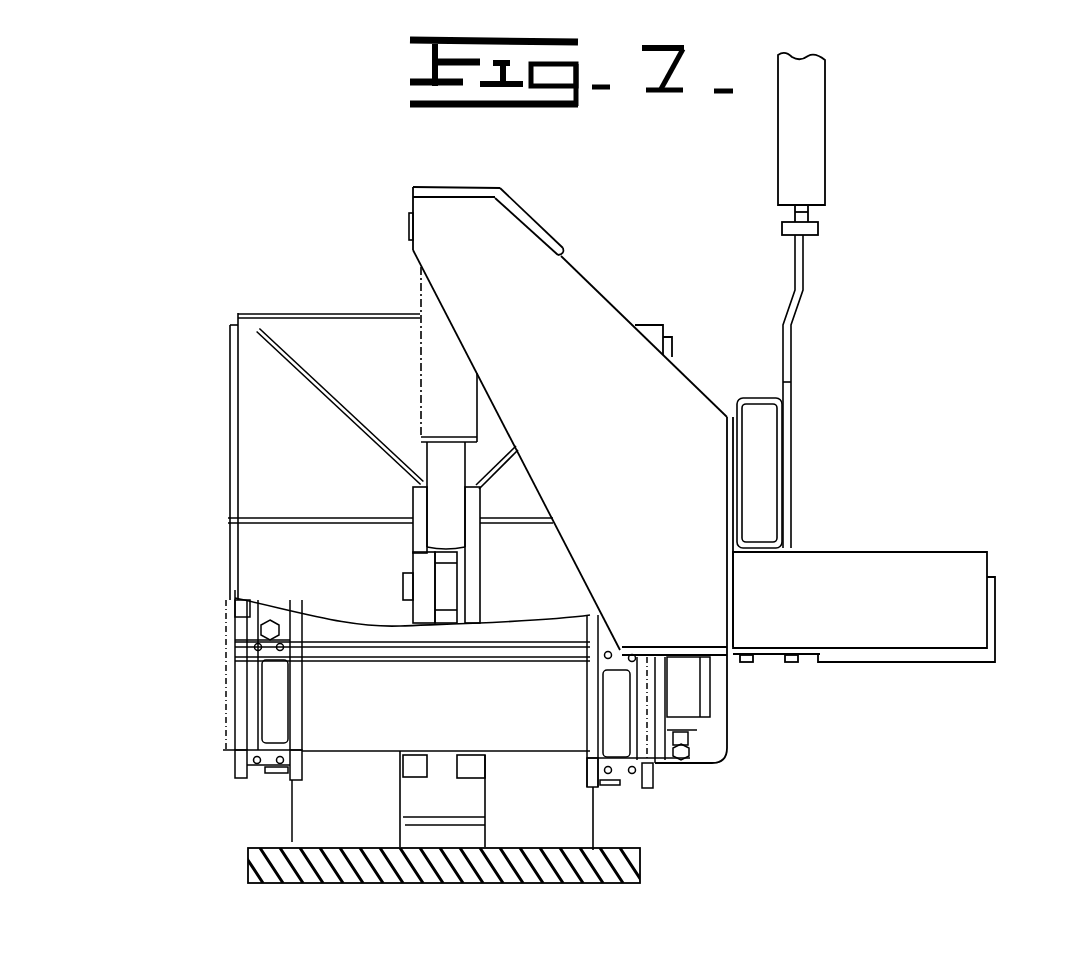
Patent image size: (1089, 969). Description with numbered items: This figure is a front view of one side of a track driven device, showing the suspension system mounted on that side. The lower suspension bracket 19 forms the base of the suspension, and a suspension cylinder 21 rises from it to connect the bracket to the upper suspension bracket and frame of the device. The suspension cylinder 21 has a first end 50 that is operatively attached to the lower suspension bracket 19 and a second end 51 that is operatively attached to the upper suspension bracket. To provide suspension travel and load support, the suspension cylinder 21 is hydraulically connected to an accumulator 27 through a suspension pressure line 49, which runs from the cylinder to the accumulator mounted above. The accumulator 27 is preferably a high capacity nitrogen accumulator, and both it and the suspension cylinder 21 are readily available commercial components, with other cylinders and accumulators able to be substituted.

The lower suspension bracket 19 is at (228, 410).
The suspension cylinder 21 is at (430, 355).
The accumulator 27 is at (823, 167).
The suspension pressure line 49 is at (784, 332).
The first end 50 is at (403, 586).
The second end 51 is at (410, 223).